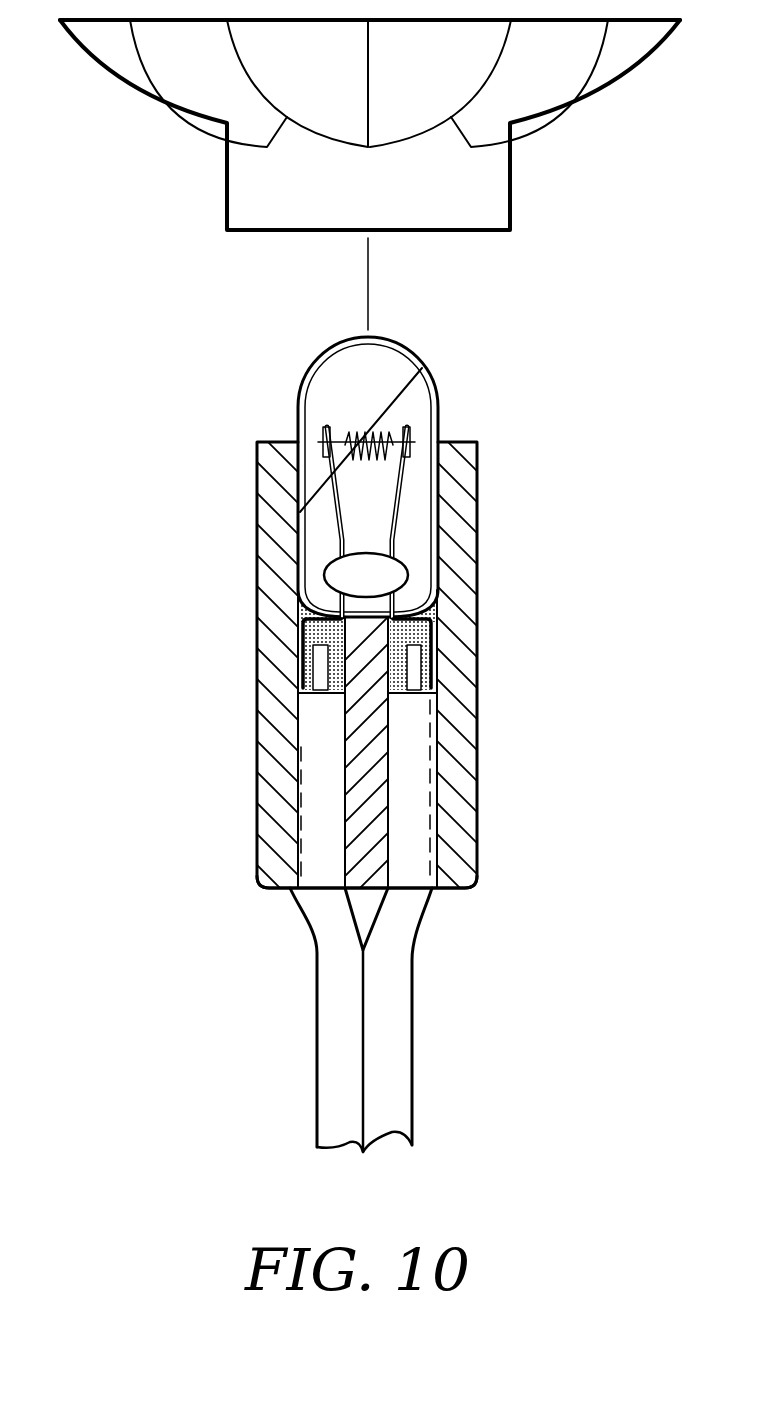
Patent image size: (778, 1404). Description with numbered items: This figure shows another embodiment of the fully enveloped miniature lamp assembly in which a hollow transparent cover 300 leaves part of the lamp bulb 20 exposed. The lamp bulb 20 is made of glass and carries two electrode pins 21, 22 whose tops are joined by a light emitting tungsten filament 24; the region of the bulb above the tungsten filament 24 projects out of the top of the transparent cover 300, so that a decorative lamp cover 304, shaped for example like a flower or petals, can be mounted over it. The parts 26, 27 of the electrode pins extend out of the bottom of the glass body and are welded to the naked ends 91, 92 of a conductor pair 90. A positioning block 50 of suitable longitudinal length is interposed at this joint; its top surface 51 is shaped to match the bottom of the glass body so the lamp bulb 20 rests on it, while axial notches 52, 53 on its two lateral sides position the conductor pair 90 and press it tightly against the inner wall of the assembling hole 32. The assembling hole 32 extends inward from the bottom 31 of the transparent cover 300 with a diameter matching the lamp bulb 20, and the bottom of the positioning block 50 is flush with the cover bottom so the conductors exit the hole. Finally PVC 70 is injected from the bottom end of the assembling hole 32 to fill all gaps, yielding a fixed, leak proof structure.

The decorative lamp cover 304 is at (227, 207).
The lamp socket housing 300 is at (477, 478).
The miniature lamp bulb 20 is at (410, 460).
The electrode pin 21 is at (333, 520).
The electrode pin 22 is at (340, 612).
The light emitting tungsten filament 24 is at (355, 432).
The exposed electrode pin part 26 is at (267, 653).
The exposed electrode pin part 27 is at (477, 653).
The bottom of the transparent cover 31 is at (437, 888).
The assembling hole 32 is at (443, 600).
The positioning block 50 is at (372, 828).
The top surface 51 is at (343, 703).
The axial notch 52 is at (340, 772).
The axial notch 53 is at (385, 750).
The PVC 70 is at (297, 615).
The conductor pair 90 is at (398, 1055).
The naked end 91 is at (322, 675).
The naked end 92 is at (423, 676).